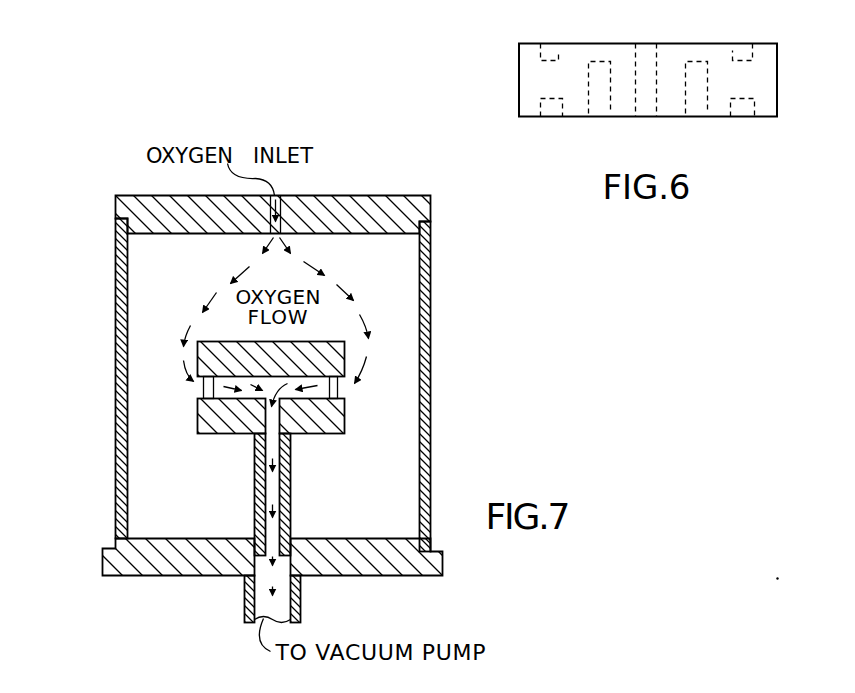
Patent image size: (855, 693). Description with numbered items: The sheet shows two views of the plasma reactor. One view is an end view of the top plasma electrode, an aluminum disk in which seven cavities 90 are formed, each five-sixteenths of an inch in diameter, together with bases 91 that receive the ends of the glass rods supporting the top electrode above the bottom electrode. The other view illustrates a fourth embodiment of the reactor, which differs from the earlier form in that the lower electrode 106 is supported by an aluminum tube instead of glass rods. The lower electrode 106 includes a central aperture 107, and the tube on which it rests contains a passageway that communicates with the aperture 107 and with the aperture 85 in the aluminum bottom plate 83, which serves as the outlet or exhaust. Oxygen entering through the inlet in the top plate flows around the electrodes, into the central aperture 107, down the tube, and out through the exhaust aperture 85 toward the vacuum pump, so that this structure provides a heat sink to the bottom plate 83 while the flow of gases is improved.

In FIG. 6, the cavities 90 is at (596, 115).
In FIG. 6, the bases 91 is at (545, 115).
In FIG. 7, the bottom plate 83 is at (400, 571).
In FIG. 7, the aperture 85 is at (282, 595).
In FIG. 7, the lower electrode 106 is at (344, 417).
In FIG. 7, the central aperture 107 is at (254, 452).